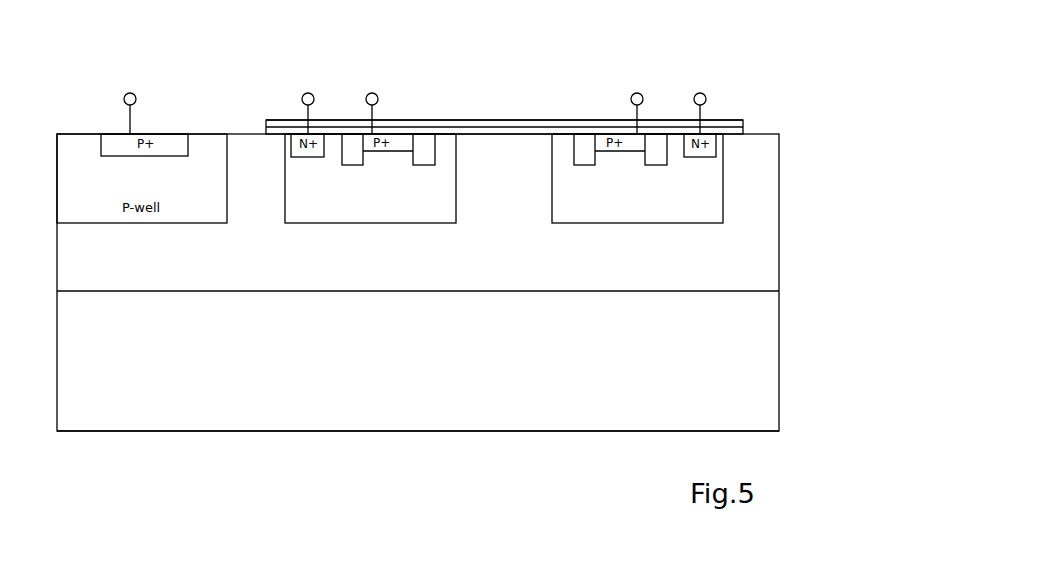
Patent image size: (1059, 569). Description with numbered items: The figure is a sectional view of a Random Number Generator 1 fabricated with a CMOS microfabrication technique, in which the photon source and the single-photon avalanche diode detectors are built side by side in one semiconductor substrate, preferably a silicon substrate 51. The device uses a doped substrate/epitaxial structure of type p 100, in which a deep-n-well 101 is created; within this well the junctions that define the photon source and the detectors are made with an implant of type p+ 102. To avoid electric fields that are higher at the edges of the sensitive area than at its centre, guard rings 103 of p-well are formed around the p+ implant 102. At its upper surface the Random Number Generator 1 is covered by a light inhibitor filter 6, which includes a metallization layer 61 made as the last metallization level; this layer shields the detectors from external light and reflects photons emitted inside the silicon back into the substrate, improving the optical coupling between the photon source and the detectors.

The Random Number Generator 1 is at (460, 240).
The light inhibitor filter 6 is at (494, 102).
The metallization layer 61 is at (320, 130).
The silicon substrate 51 is at (464, 240).
The doped substrate/epitaxial structure of type p 100 is at (489, 360).
The deep-n-well 101 is at (562, 155).
The implant of type p+ 102 is at (504, 69).
The guard rings 103 is at (348, 143).